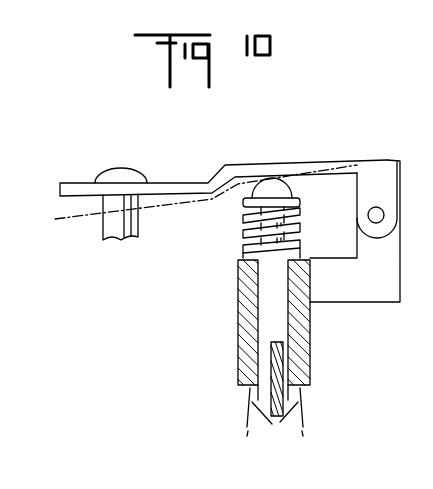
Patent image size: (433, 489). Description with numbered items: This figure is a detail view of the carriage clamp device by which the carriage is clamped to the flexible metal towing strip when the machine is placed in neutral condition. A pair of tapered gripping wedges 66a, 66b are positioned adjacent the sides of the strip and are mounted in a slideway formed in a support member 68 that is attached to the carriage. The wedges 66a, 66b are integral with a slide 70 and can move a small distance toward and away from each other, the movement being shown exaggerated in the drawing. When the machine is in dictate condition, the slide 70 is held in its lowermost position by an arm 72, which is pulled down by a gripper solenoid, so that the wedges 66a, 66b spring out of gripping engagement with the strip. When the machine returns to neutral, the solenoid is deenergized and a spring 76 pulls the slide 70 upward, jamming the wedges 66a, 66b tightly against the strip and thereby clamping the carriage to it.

The arm 72 is at (68, 210).
The spring 76 is at (248, 221).
The support member 68 is at (247, 287).
The slide 70 is at (272, 317).
The tapered gripping wedge 66a is at (262, 396).
The tapered gripping wedge 66b is at (290, 397).